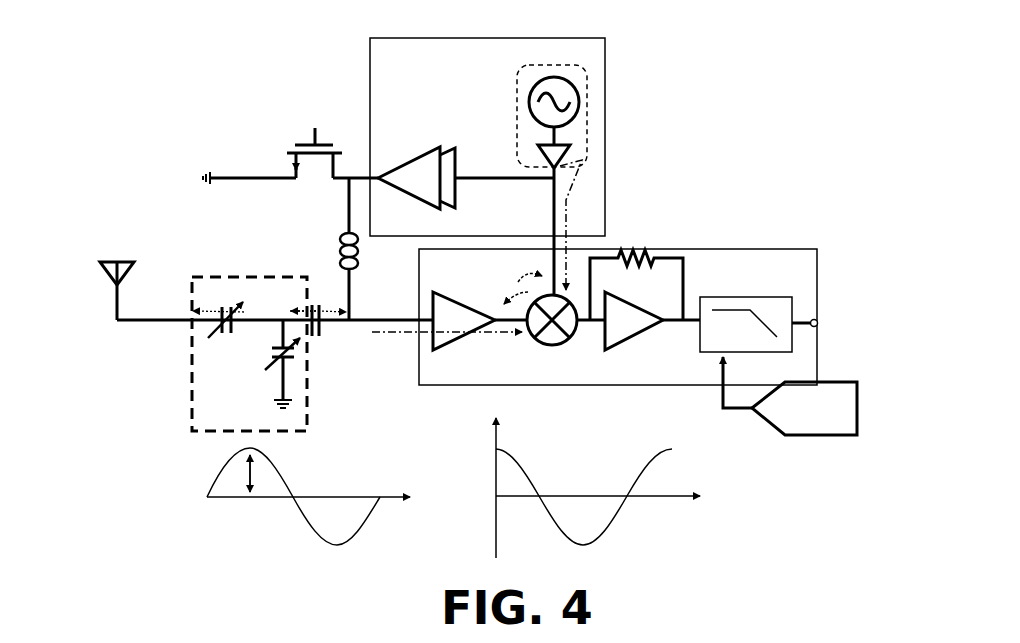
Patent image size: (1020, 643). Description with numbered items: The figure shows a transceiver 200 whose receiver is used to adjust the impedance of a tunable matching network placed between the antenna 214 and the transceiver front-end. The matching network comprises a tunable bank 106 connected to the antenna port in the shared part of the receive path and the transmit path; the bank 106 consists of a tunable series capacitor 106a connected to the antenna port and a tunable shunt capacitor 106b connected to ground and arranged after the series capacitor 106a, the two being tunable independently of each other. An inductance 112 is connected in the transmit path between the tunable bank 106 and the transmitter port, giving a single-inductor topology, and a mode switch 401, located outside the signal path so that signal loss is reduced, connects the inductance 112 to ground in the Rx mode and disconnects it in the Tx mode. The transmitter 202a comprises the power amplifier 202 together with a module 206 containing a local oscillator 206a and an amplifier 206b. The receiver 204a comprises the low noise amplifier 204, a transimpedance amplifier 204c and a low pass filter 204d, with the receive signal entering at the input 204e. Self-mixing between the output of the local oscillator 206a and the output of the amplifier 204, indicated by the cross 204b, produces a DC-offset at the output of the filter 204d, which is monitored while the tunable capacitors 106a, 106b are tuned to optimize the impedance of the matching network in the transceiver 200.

The transceiver 200 is at (832, 128).
The second amplifier 202 is at (388, 168).
The transmitter 202a is at (605, 128).
The first amplifier 204 is at (425, 336).
The receiver 204a is at (768, 249).
The cross 204b is at (575, 344).
The TIA 204c is at (653, 340).
The LPF 204d is at (793, 297).
The receiver input 204e is at (637, 249).
The module 206 is at (586, 68).
The LO 206a is at (580, 92).
The amplifier 206b is at (566, 165).
The mode switch 401 is at (298, 170).
The tunable bank 106 is at (216, 277).
The tunable series capacitor 106a is at (218, 325).
The tunable shunt capacitor 106b is at (297, 340).
The inductance 112 is at (343, 250).
The antenna 214 is at (117, 262).